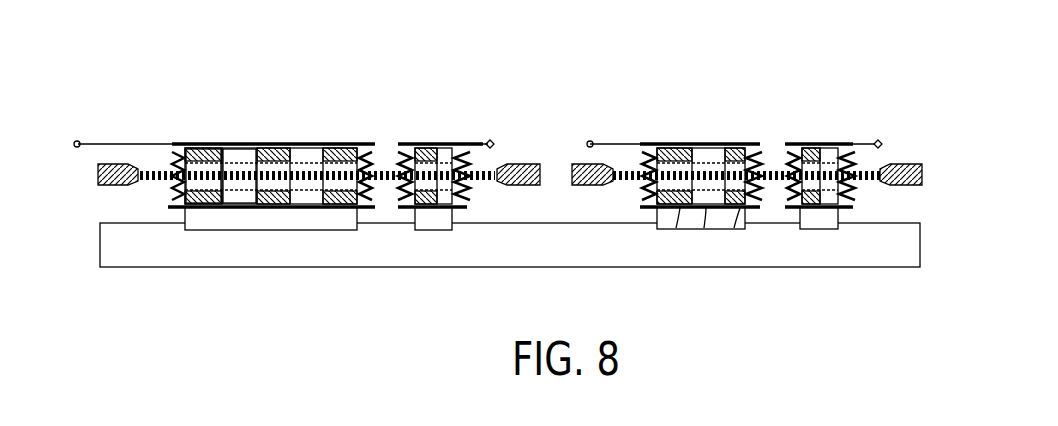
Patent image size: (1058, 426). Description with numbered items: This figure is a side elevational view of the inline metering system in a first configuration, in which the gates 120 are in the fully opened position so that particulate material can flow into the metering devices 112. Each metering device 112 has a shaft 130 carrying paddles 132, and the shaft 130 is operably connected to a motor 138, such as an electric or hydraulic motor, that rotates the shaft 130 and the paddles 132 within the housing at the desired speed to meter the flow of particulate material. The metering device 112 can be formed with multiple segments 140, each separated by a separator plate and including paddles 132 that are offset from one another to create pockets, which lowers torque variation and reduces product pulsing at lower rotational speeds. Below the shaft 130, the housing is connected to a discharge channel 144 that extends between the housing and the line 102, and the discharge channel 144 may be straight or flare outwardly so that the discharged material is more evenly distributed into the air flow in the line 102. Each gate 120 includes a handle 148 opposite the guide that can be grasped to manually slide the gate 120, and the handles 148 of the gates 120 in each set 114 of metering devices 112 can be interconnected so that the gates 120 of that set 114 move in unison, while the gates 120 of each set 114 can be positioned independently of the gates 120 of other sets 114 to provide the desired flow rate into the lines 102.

The line 102 is at (127, 262).
The metering device 112 is at (308, 140).
The set of metering devices 114 is at (357, 140).
The gate 120 is at (128, 144).
The shaft 130 is at (240, 152).
The paddles 132 is at (213, 152).
The motor 138 is at (118, 187).
The segments 140 is at (735, 222).
The discharge channel 144 is at (197, 223).
The handle 148 is at (76, 144).